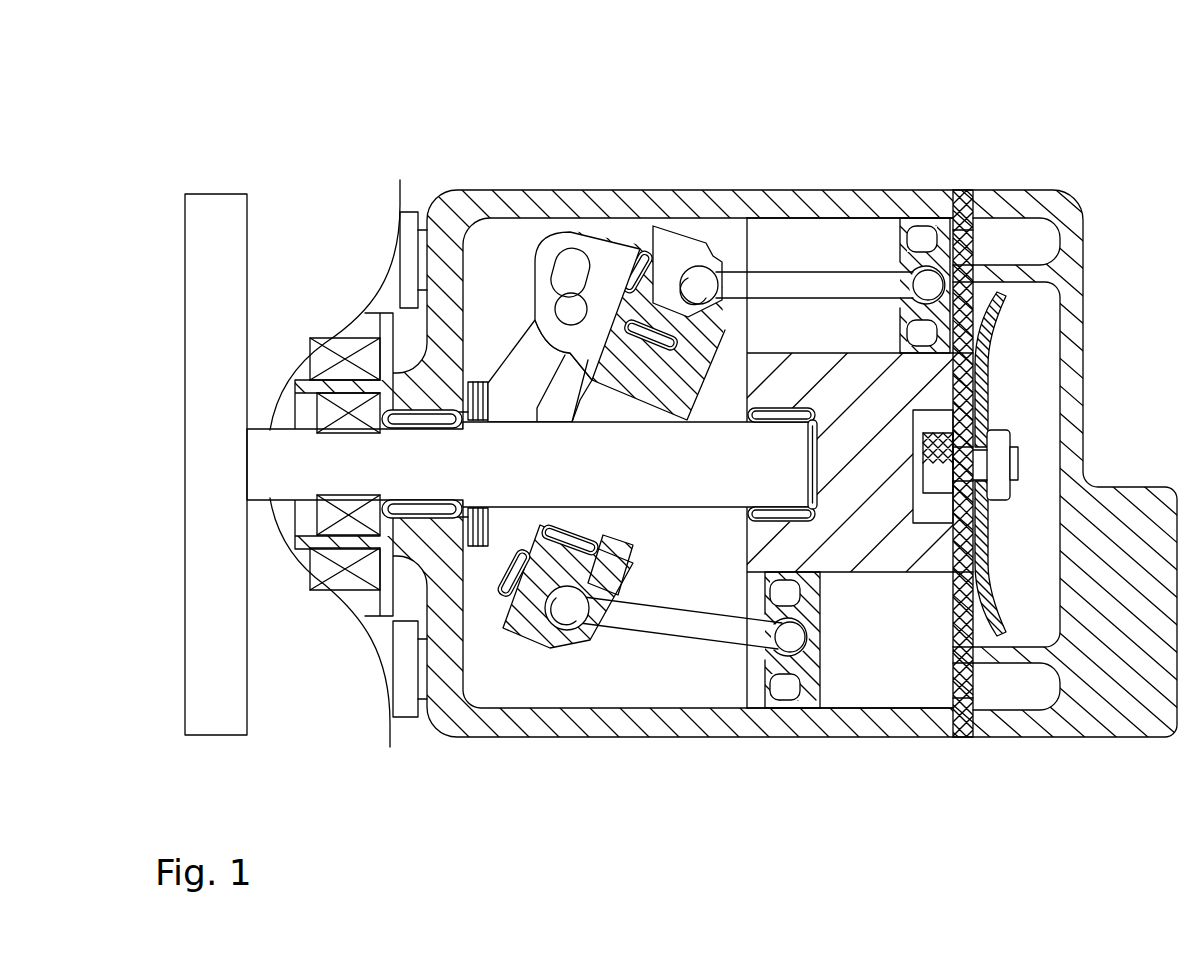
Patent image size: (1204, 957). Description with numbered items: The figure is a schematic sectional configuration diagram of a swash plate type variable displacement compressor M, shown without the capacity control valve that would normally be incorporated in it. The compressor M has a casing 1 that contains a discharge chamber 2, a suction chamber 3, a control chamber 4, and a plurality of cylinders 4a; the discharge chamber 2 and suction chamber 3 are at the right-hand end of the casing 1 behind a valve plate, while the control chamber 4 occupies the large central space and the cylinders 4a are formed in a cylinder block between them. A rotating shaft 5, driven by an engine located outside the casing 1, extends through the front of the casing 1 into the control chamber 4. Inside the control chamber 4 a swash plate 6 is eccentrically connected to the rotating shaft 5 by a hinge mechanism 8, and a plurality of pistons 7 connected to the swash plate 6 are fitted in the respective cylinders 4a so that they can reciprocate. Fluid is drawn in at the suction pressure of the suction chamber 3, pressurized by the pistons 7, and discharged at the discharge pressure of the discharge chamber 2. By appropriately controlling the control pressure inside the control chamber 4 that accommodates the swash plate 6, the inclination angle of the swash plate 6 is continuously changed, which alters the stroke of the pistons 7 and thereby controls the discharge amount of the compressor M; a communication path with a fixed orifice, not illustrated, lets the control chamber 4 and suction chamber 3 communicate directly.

The casing 1 is at (474, 183).
The discharge chamber 2 is at (1030, 387).
The suction chamber 3 is at (1045, 240).
The control chamber 4 is at (661, 688).
The cylinders 4a is at (832, 228).
The rotating shaft 5 is at (497, 470).
The swash plate 6 is at (652, 360).
The pistons 7 is at (933, 228).
The hinge mechanism 8 is at (512, 373).
The variable displacement compressor M is at (1062, 112).